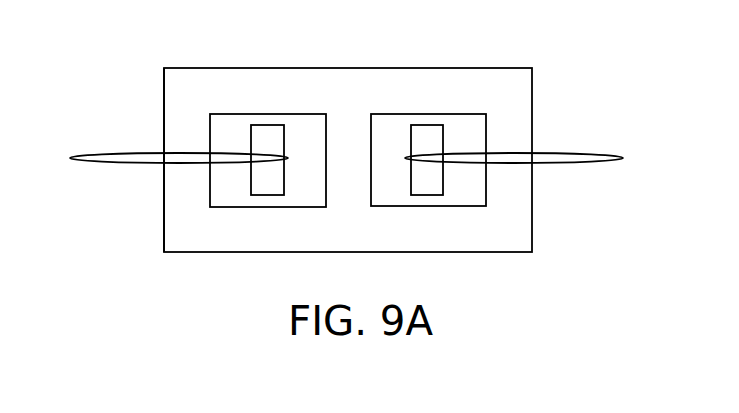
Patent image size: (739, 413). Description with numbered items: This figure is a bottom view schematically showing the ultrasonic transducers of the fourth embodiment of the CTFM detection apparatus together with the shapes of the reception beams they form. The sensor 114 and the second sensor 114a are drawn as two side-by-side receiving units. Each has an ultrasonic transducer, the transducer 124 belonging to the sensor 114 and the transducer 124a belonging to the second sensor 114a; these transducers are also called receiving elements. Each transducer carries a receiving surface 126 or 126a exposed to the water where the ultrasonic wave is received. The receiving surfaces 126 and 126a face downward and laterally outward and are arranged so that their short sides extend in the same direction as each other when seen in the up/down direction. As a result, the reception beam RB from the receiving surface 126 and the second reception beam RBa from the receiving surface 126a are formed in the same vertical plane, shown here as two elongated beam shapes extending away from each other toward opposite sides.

The sensor 114 is at (510, 68).
The second sensor 114a is at (180, 68).
The ultrasonic transducer 124 is at (412, 114).
The ultrasonic transducer 124a is at (281, 114).
The receiving surface 126 is at (425, 125).
The receiving surface 126a is at (265, 125).
The reception beam RB is at (568, 152).
The second reception beam RBa is at (122, 152).